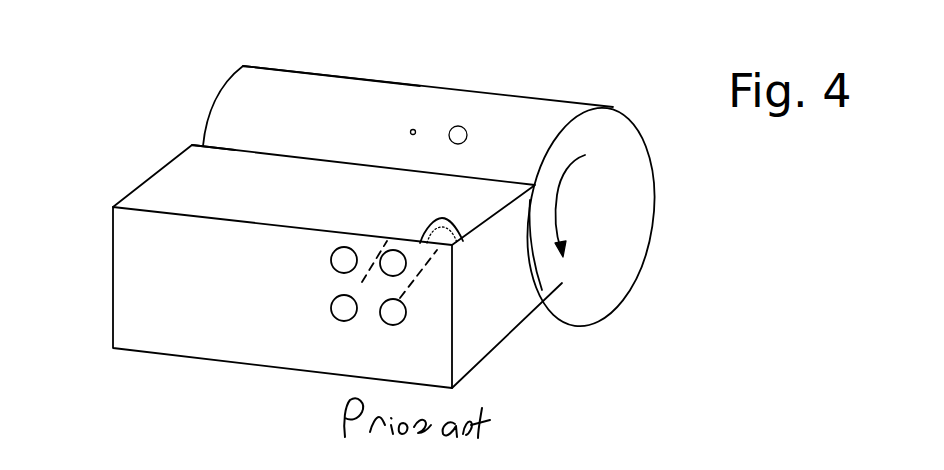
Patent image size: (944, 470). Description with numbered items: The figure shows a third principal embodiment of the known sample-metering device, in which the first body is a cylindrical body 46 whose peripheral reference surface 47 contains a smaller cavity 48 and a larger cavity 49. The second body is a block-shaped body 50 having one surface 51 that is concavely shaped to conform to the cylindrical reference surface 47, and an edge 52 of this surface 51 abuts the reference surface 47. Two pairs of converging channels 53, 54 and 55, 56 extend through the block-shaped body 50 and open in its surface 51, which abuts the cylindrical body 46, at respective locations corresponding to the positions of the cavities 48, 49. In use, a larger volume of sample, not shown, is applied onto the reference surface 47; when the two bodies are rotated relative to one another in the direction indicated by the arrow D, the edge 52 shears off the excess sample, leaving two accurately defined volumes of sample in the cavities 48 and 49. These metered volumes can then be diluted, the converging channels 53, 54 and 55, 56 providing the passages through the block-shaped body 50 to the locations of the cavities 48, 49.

The cylindrical body 46 is at (622, 152).
The peripheral reference surface 47 is at (305, 95).
The smaller cavity 48 is at (411, 128).
The larger cavity 49 is at (460, 126).
The block-shaped body 50 is at (133, 242).
The concave surface 51 is at (532, 270).
The edge 52 is at (232, 147).
The converging channel 53 is at (357, 288).
The converging channel 54 is at (372, 250).
The converging channel 55 is at (420, 277).
The converging channel 56 is at (448, 244).
The arrow indicating relative rotation D is at (562, 190).